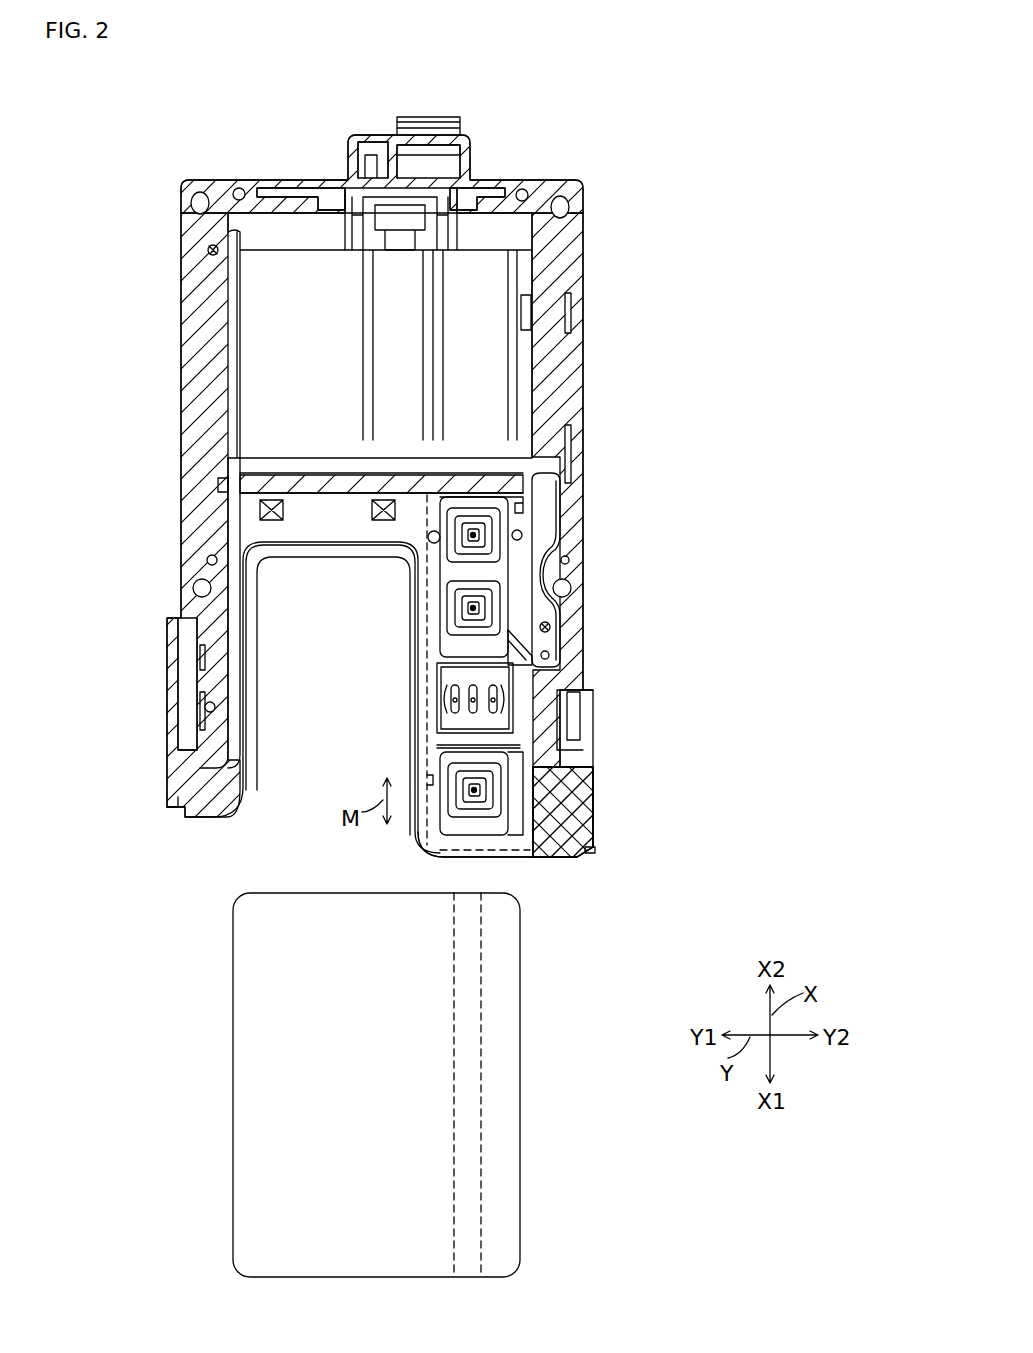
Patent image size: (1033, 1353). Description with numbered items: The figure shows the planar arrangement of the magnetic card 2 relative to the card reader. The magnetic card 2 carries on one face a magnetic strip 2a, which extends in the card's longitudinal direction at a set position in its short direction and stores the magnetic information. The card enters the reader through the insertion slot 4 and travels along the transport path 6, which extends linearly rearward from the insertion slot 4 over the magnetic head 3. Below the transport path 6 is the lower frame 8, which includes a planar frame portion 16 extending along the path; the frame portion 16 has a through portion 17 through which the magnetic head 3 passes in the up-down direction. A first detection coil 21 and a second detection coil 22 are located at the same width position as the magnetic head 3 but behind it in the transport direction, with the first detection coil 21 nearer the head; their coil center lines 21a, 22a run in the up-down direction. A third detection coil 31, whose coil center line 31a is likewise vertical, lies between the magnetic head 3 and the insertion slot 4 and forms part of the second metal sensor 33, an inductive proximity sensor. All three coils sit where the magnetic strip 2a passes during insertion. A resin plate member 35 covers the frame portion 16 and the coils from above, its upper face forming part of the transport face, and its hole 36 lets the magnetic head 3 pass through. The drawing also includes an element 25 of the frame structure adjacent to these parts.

The magnetic card 2 is at (540, 1094).
The magnetic strip 2a is at (481, 1153).
The magnetic head 3 is at (458, 716).
The insertion slot 4 is at (402, 838).
The transport path 6 is at (340, 625).
The lower frame 8 is at (586, 427).
The frame portion 16 is at (519, 577).
The through portion 17 is at (573, 680).
The first detection coil 21 is at (503, 623).
The coil center line of the first detection coil 21a is at (500, 607).
The second detection coil 22 is at (503, 550).
The coil center line of the second detection coil 22a is at (543, 510).
The cover plate 25 is at (596, 548).
The third detection coil 31 is at (500, 801).
The coil center line of the third detection coil 31a is at (590, 800).
The second metal sensor 33 is at (541, 836).
The plate member 35 is at (533, 766).
The hole 36 is at (597, 725).